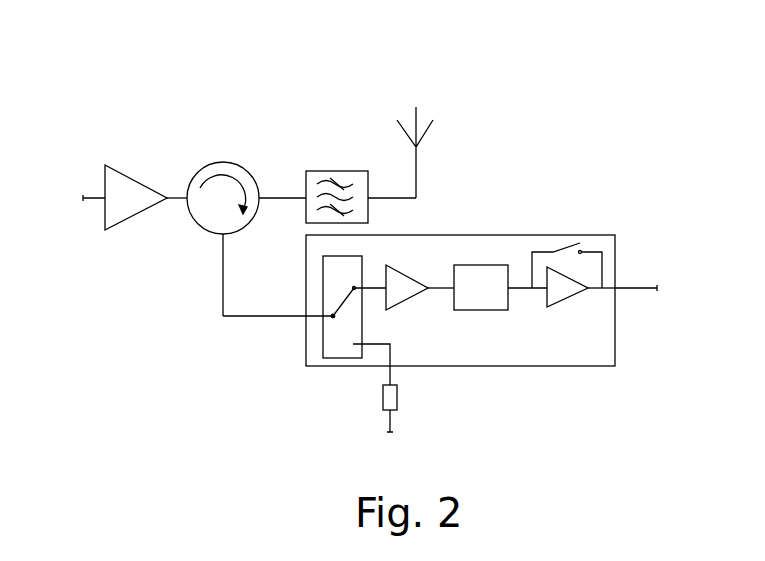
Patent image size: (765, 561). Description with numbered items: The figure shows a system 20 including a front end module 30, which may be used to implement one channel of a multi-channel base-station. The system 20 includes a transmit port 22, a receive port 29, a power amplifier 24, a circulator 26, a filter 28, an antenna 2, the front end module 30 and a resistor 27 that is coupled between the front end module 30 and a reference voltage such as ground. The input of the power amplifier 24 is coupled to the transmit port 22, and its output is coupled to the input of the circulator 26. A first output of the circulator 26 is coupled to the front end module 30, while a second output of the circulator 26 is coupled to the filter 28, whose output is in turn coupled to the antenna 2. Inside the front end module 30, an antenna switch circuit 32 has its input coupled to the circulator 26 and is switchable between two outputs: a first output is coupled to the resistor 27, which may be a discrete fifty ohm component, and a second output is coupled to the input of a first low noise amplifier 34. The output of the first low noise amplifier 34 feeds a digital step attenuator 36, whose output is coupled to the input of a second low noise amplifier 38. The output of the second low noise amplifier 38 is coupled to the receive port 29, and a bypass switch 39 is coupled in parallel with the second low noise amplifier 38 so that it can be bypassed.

The antenna 2 is at (437, 105).
The system 20 is at (641, 98).
The transmit port 22 is at (73, 187).
The power amplifier 24 is at (139, 171).
The circulator 26 is at (222, 187).
The resistor 27 is at (371, 405).
The filter 28 is at (325, 163).
The receive port 29 is at (662, 275).
The front end module 30 is at (598, 356).
The antenna switch circuit 32 is at (321, 301).
The first low noise amplifier 34 is at (401, 262).
The digital step attenuator 36 is at (484, 257).
The second low noise amplifier 38 is at (545, 308).
The bypass switch 39 is at (573, 227).